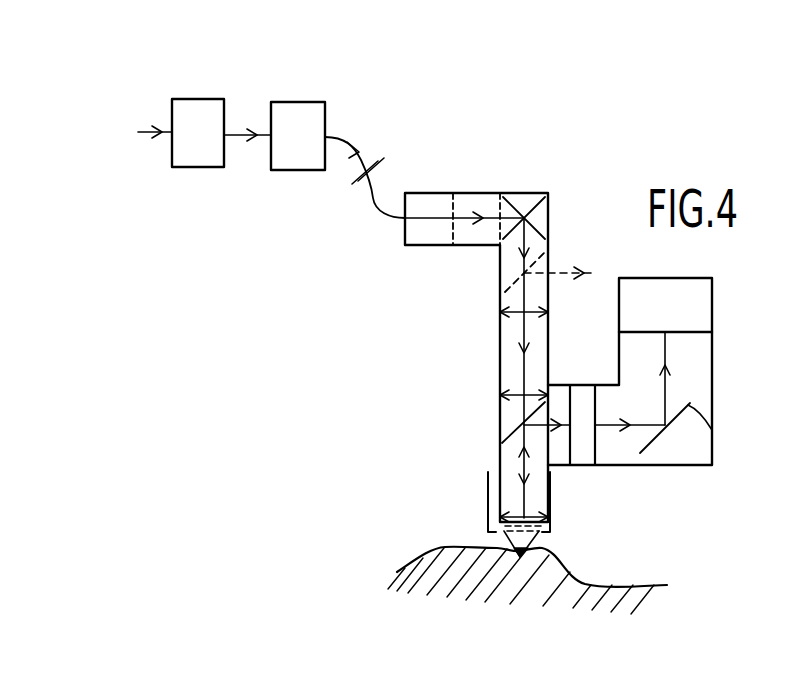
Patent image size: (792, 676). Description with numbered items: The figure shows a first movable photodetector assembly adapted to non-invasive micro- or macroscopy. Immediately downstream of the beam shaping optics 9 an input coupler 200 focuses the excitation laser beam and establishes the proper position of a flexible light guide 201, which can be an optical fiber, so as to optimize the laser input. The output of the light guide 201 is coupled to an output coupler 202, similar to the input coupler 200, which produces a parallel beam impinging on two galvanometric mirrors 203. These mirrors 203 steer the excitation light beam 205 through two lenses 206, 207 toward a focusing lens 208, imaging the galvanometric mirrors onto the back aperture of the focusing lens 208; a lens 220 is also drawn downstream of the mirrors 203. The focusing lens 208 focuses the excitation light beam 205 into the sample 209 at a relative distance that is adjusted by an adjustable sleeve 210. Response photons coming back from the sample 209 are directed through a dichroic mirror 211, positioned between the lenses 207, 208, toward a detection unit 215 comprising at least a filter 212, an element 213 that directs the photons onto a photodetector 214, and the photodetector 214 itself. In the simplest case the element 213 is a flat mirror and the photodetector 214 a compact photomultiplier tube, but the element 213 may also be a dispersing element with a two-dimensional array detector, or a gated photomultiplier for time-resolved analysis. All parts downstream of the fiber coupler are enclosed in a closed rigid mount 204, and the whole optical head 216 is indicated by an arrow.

The beam shaping optics 9 is at (197, 167).
The input coupler 200 is at (300, 170).
The flexible light guide 201 is at (374, 199).
The output coupler 202 is at (430, 193).
The closed rigid mount 204 is at (484, 193).
The galvanometric mirrors 203 is at (520, 210).
The lens 220 is at (547, 265).
The excitation light beam 205 is at (500, 335).
The lens 206 is at (500, 337).
The lens 207 is at (500, 400).
The dichroic mirror 211 is at (500, 432).
The filter 212 is at (583, 385).
The element directing photons 213 is at (712, 430).
The photodetector 214 is at (712, 303).
The detection unit 215 is at (654, 488).
The optical head 216 is at (390, 403).
The adjustable sleeve 210 is at (488, 494).
The focusing lens 208 is at (535, 520).
The sample 209 is at (425, 562).